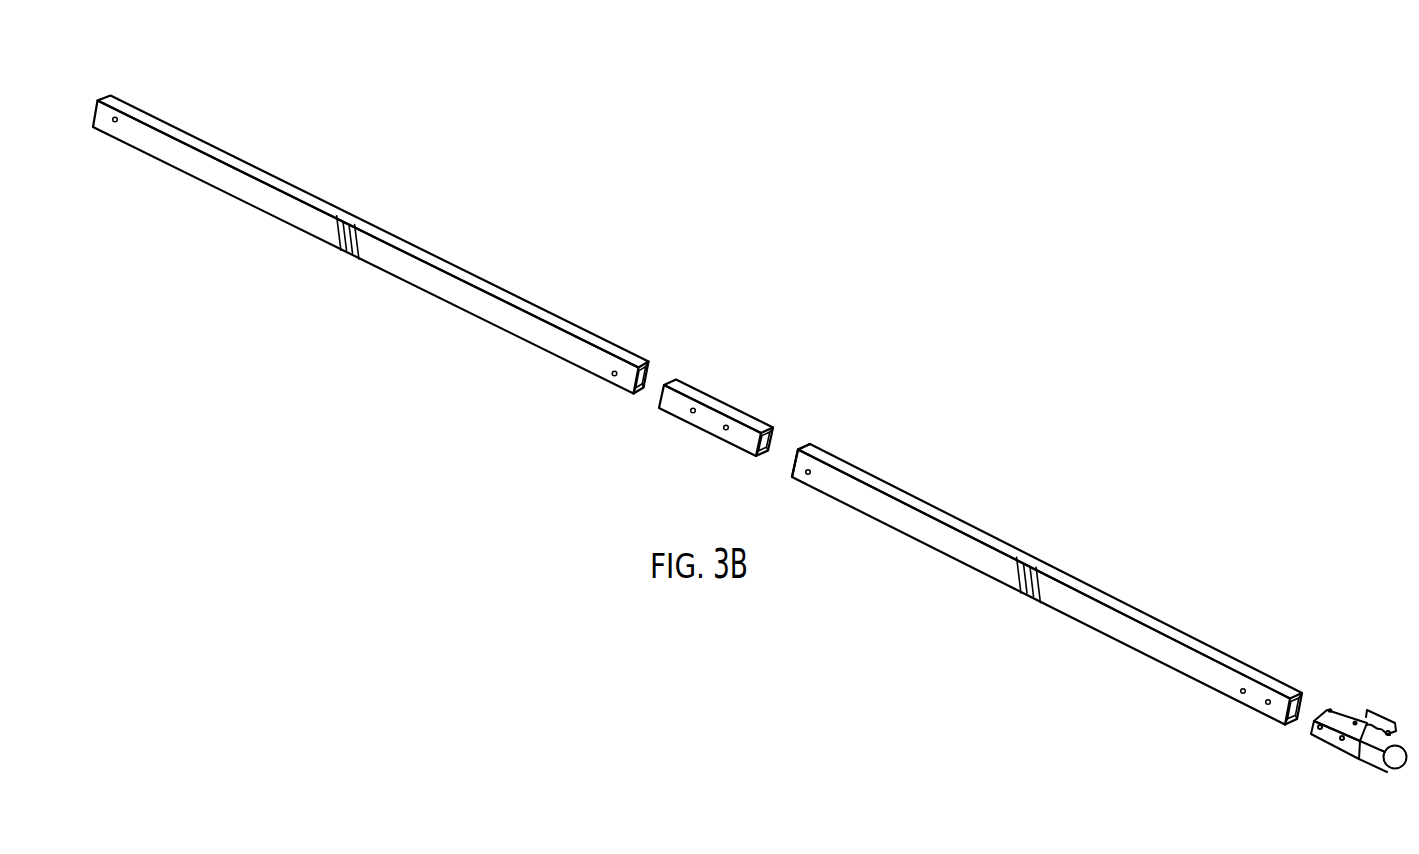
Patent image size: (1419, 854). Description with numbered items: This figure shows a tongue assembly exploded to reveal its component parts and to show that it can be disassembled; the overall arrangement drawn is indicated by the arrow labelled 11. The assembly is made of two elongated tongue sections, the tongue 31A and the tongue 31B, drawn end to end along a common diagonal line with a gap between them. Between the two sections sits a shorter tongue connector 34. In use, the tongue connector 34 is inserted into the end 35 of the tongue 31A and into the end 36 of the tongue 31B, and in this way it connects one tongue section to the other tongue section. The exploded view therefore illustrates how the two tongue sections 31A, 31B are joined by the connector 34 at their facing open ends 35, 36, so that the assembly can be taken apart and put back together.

The tow bar assembly 11 is at (1036, 273).
The tongue 31A is at (371, 225).
The tongue 31B is at (1033, 562).
The tongue connector 34 is at (720, 398).
The end of the tongue 35 is at (647, 365).
The end of the tongue 36 is at (786, 452).